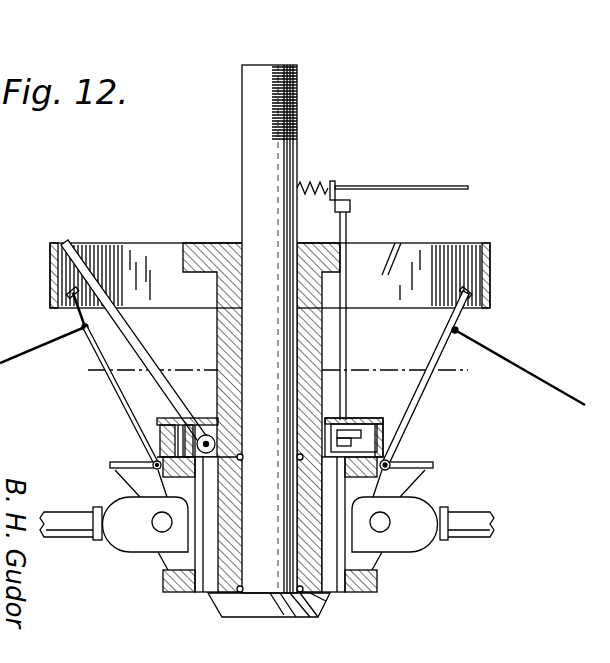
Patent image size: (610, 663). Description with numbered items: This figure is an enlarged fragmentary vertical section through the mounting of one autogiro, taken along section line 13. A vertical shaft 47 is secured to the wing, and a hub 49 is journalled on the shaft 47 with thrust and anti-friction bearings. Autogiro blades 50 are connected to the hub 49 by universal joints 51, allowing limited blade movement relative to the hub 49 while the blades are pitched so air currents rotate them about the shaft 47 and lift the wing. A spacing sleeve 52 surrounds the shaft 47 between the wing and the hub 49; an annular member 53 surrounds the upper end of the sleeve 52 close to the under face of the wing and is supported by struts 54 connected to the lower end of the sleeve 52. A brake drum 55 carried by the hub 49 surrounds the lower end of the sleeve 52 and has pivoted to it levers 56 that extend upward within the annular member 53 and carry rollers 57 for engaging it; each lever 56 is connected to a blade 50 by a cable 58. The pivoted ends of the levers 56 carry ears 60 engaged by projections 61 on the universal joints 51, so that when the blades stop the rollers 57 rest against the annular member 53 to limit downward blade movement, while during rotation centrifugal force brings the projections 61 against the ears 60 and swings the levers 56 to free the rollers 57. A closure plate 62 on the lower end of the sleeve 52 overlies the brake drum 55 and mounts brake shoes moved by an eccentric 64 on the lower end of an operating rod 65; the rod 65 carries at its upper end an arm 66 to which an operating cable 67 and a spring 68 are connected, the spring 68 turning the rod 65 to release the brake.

The section line 13 is at (271, 371).
The vertical shaft 47 is at (242, 155).
The hub 49 is at (313, 563).
The autogiro blades 50 is at (496, 521).
The universal joints 51 is at (162, 522).
The spacing sleeve 52 is at (300, 356).
The annular member 53 is at (490, 257).
The struts 54 is at (150, 362).
The brake drum 55 is at (160, 437).
The levers 56 is at (420, 393).
The rollers 57 is at (492, 295).
The cable 58 is at (292, 366).
The ears 60 is at (415, 462).
The projections 61 is at (405, 483).
The closure plate 62 is at (355, 418).
The eccentric 64 is at (365, 430).
The operating rod 65 is at (348, 324).
The arm 66 is at (352, 207).
The operating cable 67 is at (435, 186).
The spring 68 is at (318, 182).